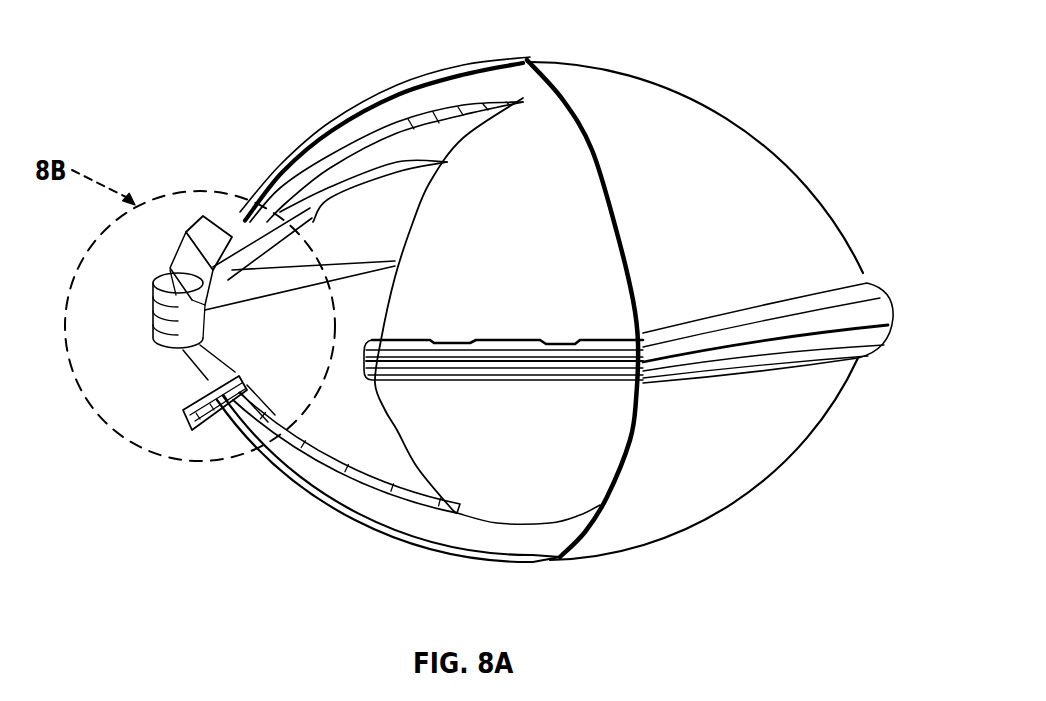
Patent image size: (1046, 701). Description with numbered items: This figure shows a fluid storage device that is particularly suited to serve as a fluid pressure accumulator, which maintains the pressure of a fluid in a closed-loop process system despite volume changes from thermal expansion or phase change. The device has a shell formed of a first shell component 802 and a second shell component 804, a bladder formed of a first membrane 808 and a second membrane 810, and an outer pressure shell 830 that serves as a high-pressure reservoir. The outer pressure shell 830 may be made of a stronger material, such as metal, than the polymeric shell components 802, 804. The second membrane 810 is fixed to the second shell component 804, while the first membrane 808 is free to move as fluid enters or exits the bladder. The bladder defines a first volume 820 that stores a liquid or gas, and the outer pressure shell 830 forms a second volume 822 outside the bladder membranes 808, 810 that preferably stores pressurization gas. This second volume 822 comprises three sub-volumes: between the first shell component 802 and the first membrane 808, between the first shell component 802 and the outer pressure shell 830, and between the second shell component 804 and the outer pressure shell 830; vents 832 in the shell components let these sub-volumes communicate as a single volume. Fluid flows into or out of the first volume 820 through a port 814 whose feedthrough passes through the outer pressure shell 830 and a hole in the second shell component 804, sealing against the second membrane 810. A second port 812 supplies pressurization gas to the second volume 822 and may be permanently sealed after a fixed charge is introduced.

The first shell component 802 is at (524, 172).
The second shell component 804 is at (483, 498).
The first membrane 808 is at (276, 232).
The second membrane 810 is at (303, 452).
The second port 812 is at (198, 237).
The port 814 is at (190, 412).
The first volume 820 is at (247, 432).
The second volume 822 is at (416, 139).
The outer pressure shell 830 is at (764, 167).
The vent 832 is at (549, 344).